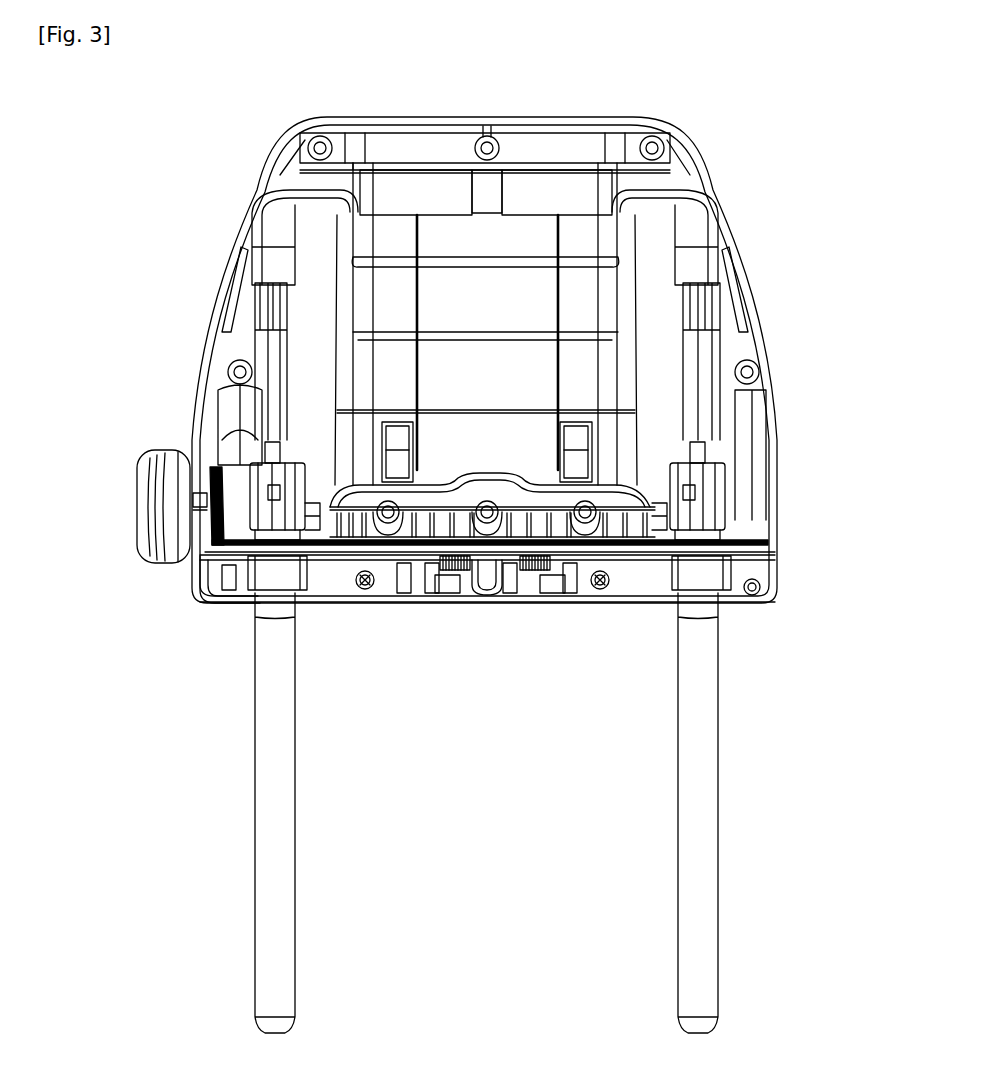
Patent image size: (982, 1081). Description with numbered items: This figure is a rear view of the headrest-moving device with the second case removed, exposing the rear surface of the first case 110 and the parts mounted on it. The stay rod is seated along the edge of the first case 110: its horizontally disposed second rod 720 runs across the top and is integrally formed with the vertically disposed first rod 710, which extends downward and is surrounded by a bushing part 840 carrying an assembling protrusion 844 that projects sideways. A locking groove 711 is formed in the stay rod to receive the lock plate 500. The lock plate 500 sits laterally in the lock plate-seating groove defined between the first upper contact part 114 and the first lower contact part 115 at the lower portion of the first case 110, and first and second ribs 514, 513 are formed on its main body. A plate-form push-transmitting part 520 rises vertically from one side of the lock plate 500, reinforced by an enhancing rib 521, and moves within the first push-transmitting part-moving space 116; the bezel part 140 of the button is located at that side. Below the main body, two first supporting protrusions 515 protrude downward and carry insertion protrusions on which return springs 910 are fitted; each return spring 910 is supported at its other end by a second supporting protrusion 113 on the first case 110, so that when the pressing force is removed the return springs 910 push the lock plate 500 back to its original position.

The first case 110 is at (740, 228).
The second supporting protrusion 113 is at (553, 577).
The first upper contact part 114 is at (322, 532).
The first lower contact part 115 is at (393, 583).
The first push-transmitting part-moving space 116 is at (313, 523).
The bezel part 140 is at (145, 523).
The lock plate 500 is at (737, 548).
The second rib 513 is at (390, 552).
The first rib 514 is at (210, 600).
The first supporting protrusion 515 is at (515, 577).
The push-transmitting part 520 is at (197, 510).
The enhancing rib 521 is at (222, 520).
The first rod 710 is at (273, 240).
The locking groove 711 is at (297, 337).
The second rod 720 is at (328, 180).
The bushing part 840 is at (718, 315).
The assembling protrusion 844 is at (665, 522).
The return spring 910 is at (540, 577).